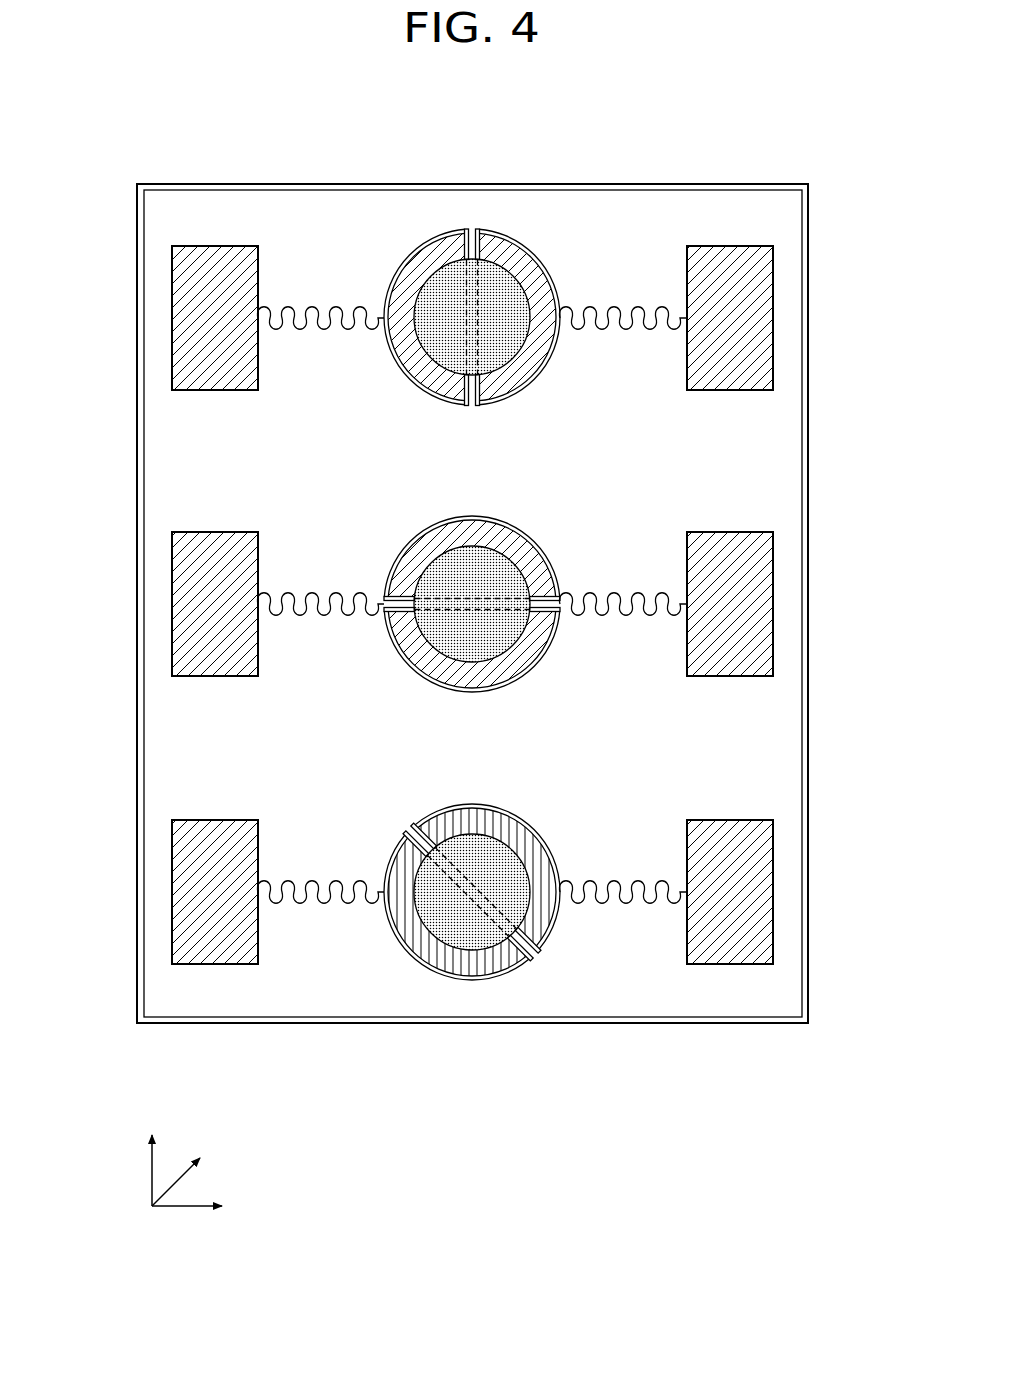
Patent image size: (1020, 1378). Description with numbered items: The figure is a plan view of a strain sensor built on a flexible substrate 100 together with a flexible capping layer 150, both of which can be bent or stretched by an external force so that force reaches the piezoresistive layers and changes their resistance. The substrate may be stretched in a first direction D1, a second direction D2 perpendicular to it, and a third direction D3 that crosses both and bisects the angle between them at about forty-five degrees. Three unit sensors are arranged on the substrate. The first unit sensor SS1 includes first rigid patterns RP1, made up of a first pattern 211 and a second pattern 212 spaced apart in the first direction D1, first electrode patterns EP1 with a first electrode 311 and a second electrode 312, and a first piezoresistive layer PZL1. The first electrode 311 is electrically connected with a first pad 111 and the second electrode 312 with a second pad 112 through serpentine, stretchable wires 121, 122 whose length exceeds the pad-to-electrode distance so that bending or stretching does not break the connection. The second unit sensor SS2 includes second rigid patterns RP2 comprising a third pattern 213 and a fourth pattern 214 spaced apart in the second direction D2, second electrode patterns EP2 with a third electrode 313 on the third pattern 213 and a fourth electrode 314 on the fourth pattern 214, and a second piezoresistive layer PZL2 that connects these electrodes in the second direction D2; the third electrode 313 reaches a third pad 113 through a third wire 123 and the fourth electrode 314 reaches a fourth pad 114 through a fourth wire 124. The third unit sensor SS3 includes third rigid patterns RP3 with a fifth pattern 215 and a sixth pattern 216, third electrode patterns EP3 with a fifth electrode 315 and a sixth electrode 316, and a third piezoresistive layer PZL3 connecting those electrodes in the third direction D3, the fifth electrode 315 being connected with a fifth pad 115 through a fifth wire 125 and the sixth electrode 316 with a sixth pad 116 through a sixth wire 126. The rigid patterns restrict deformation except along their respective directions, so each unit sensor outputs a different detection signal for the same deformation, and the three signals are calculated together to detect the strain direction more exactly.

The flexible substrate 100 is at (806, 221).
The flexible capping layer 150 is at (787, 256).
The first pad 111 is at (185, 318).
The second pad 112 is at (760, 317).
The third pad 113 is at (185, 603).
The fourth pad 114 is at (760, 603).
The fifth pad 115 is at (185, 891).
The sixth pad 116 is at (760, 891).
The first wire 121 is at (328, 305).
The second wire 122 is at (618, 305).
The third wire 123 is at (315, 590).
The fourth wire 124 is at (616, 590).
The fifth wire 125 is at (315, 905).
The sixth wire 126 is at (628, 905).
The first pattern 211 is at (466, 376).
The second pattern 212 is at (478, 406).
The third pattern 213 is at (392, 590).
The fourth pattern 214 is at (400, 655).
The fifth pattern 215 is at (543, 832).
The sixth pattern 216 is at (490, 806).
The first electrode 311 is at (447, 242).
The second electrode 312 is at (497, 242).
The third electrode 313 is at (490, 525).
The fourth electrode 314 is at (540, 600).
The fifth electrode 315 is at (442, 962).
The sixth electrode 316 is at (400, 950).
The first piezoresistive layer PZL1 is at (420, 283).
The second piezoresistive layer PZL2 is at (455, 560).
The third piezoresistive layer PZL3 is at (480, 935).
The first electrode patterns EP1 is at (472, 244).
The second electrode patterns EP2 is at (485, 549).
The third electrode patterns EP3 is at (472, 948).
The first rigid patterns RP1 is at (371, 328).
The second rigid patterns RP2 is at (446, 694).
The third rigid patterns RP3 is at (495, 827).
The first unit sensor SS1 is at (421, 255).
The second unit sensor SS2 is at (460, 602).
The third unit sensor SS3 is at (472, 910).
The first direction D1 is at (202, 1204).
The second direction D2 is at (150, 1155).
The third direction D3 is at (191, 1174).